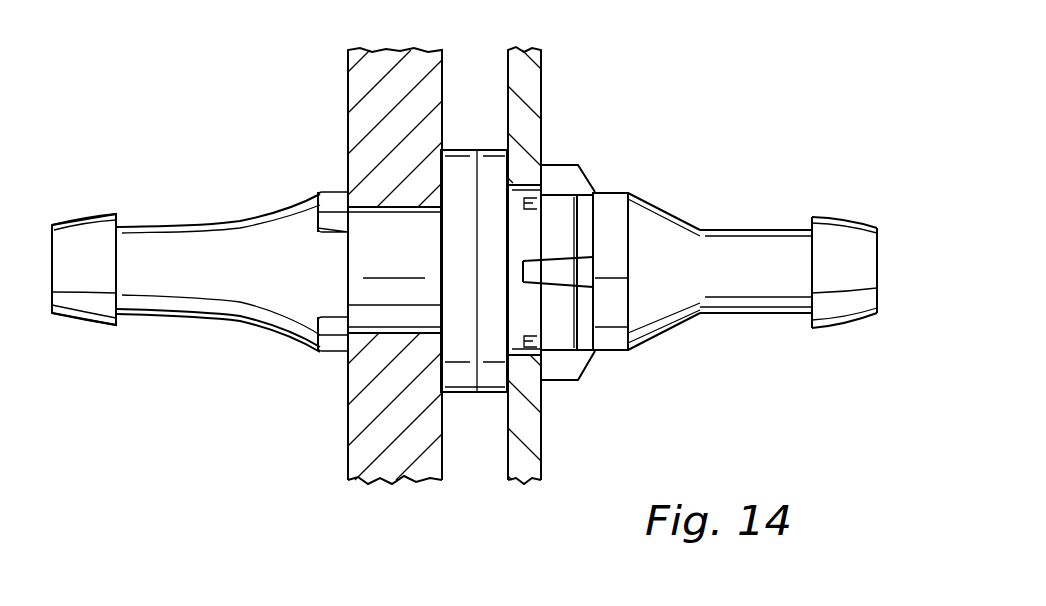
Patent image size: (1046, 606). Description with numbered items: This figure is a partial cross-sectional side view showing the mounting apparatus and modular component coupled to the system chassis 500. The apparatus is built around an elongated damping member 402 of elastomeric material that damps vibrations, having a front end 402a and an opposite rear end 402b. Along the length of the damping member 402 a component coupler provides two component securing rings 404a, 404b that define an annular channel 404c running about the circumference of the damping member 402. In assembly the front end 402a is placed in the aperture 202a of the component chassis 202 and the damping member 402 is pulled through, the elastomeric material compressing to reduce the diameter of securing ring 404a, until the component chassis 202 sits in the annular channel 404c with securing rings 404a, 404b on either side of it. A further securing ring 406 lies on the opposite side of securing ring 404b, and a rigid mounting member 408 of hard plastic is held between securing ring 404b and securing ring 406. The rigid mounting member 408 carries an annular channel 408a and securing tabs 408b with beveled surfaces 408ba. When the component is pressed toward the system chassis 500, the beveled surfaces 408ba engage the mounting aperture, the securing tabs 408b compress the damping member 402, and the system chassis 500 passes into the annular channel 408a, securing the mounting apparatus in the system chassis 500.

The component chassis 202 is at (348, 95).
The aperture 202a is at (372, 210).
The elongated damping member 402 is at (207, 227).
The front end 402a is at (84, 218).
The rear end 402b is at (847, 217).
The component securing ring 404a is at (337, 192).
The component securing ring 404b is at (457, 148).
The annular channel 404c is at (394, 263).
The securing ring 406 is at (615, 302).
The rigid mounting member 408 is at (595, 499).
The annular channel 408a is at (523, 160).
The securing tabs 408b is at (555, 177).
The beveled surfaces 408ba is at (587, 213).
The system chassis 500 is at (541, 445).